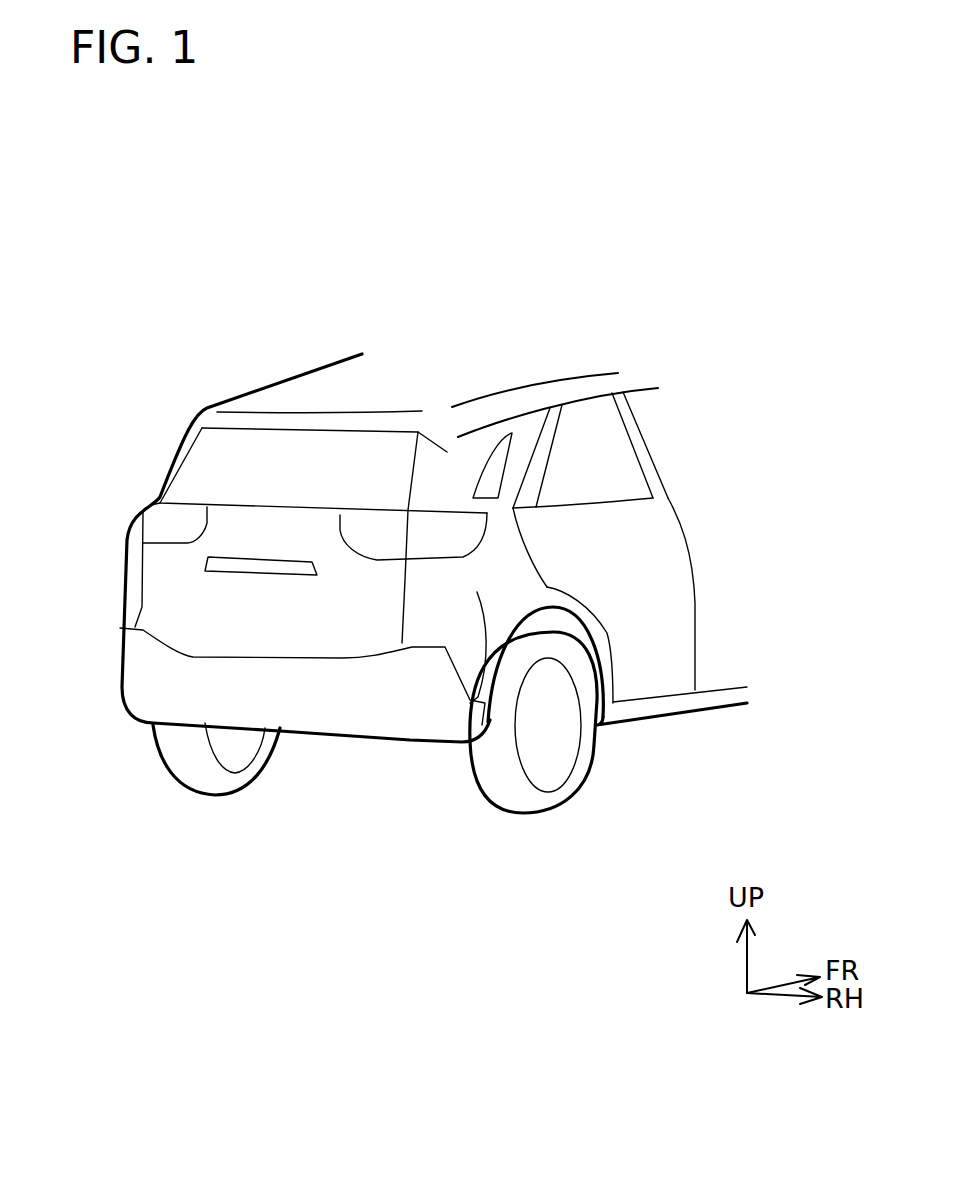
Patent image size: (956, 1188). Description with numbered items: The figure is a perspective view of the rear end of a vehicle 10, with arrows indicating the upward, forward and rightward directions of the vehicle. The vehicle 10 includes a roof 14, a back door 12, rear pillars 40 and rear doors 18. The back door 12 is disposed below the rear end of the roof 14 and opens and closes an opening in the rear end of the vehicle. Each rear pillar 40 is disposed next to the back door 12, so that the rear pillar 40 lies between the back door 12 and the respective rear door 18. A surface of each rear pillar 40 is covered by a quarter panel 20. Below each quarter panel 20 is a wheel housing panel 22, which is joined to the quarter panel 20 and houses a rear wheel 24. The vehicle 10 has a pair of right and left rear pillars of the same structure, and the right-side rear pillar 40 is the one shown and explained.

The vehicle 10 is at (180, 208).
The back door 12 is at (187, 602).
The roof 14 is at (334, 417).
The rear door 18 is at (657, 625).
The quarter panel 20 is at (470, 703).
The wheel housing panel 22 is at (577, 632).
The rear wheel 24 is at (540, 743).
The rear pillar 40 is at (463, 463).